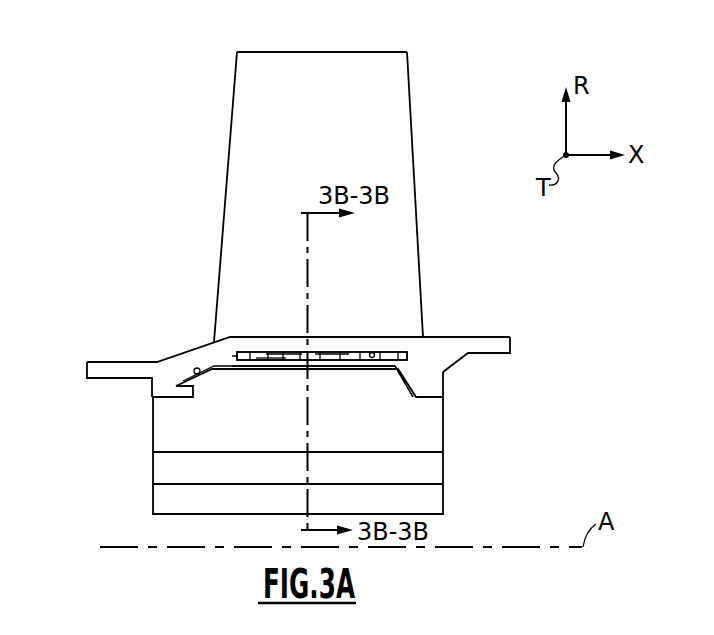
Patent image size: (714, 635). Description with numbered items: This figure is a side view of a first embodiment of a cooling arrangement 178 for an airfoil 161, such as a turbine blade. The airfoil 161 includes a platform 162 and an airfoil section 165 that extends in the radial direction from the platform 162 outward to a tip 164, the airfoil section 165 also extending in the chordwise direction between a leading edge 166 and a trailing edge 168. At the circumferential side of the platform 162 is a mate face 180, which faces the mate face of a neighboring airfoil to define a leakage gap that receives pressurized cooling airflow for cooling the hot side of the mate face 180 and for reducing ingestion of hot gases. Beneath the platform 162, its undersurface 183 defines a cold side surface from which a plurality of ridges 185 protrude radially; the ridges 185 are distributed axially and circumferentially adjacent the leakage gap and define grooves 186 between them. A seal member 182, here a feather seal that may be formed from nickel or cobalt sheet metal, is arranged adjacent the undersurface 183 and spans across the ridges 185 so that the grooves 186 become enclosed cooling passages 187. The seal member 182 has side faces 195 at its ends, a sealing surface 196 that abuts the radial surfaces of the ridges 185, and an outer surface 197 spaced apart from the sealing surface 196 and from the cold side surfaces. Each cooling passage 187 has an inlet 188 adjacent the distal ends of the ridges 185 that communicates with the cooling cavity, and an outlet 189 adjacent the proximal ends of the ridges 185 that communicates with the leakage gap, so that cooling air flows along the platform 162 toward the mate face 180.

The airfoil 161 is at (100, 80).
The platform 162 is at (473, 336).
The tip 164 is at (372, 52).
The airfoil section 165 is at (395, 147).
The leading edge 166 is at (228, 157).
The trailing edge 168 is at (414, 170).
The cooling arrangement 178 is at (207, 410).
The mate face 180 is at (447, 353).
The seal member 182 is at (353, 368).
The undersurface 183 is at (197, 368).
The ridges 185 is at (258, 361).
The grooves 186 is at (347, 352).
The cooling passages 187 is at (300, 352).
The inlet 188 is at (372, 352).
The outlet 189 is at (322, 356).
The side faces 195 is at (324, 368).
The sealing surface 196 is at (372, 370).
The outer surface 197 is at (341, 368).